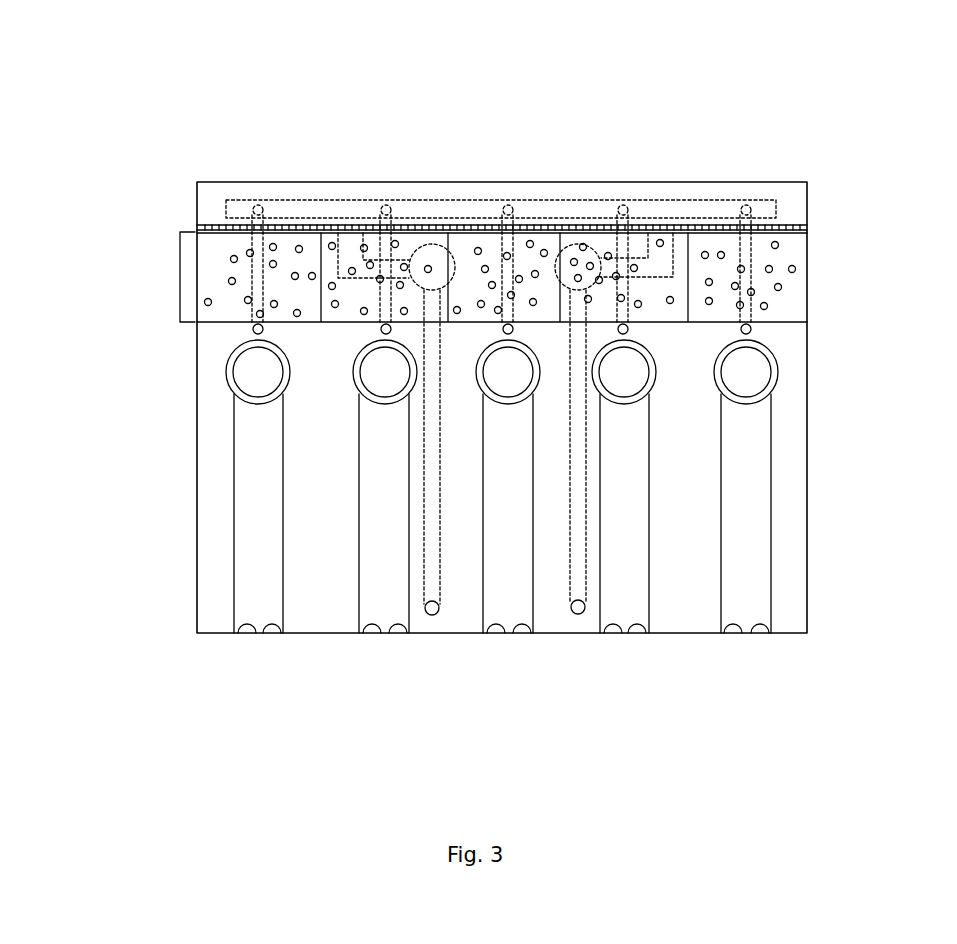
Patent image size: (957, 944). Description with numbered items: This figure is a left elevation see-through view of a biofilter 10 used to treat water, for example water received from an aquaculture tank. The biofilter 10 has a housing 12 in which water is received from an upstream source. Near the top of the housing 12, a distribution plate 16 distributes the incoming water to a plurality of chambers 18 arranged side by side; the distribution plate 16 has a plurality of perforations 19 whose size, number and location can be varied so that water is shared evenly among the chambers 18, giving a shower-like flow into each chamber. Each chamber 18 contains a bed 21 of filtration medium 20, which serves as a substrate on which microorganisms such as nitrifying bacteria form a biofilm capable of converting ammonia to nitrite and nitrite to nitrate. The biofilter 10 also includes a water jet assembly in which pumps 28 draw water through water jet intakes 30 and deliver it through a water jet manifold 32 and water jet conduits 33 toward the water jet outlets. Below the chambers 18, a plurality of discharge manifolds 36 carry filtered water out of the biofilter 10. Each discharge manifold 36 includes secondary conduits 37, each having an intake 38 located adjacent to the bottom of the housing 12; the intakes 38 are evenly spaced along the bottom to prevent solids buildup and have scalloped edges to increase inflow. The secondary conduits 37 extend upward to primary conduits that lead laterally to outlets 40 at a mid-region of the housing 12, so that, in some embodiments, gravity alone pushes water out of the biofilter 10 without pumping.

The biofilter 10 is at (513, 128).
The housing 12 is at (770, 182).
The distribution plate 16 is at (808, 225).
The chambers 18 is at (808, 263).
The perforations 19 is at (700, 224).
The filtration medium 20 is at (807, 308).
The bed 21 is at (180, 273).
The pumps 28 is at (599, 251).
The water jet intakes 30 is at (582, 614).
The water jet manifold 32 is at (308, 200).
The water jet conduits 33 is at (253, 328).
The discharge manifolds 36 is at (775, 418).
The secondary conduits 37 is at (772, 482).
The intakes 38 is at (752, 633).
The outlets 40 is at (778, 372).